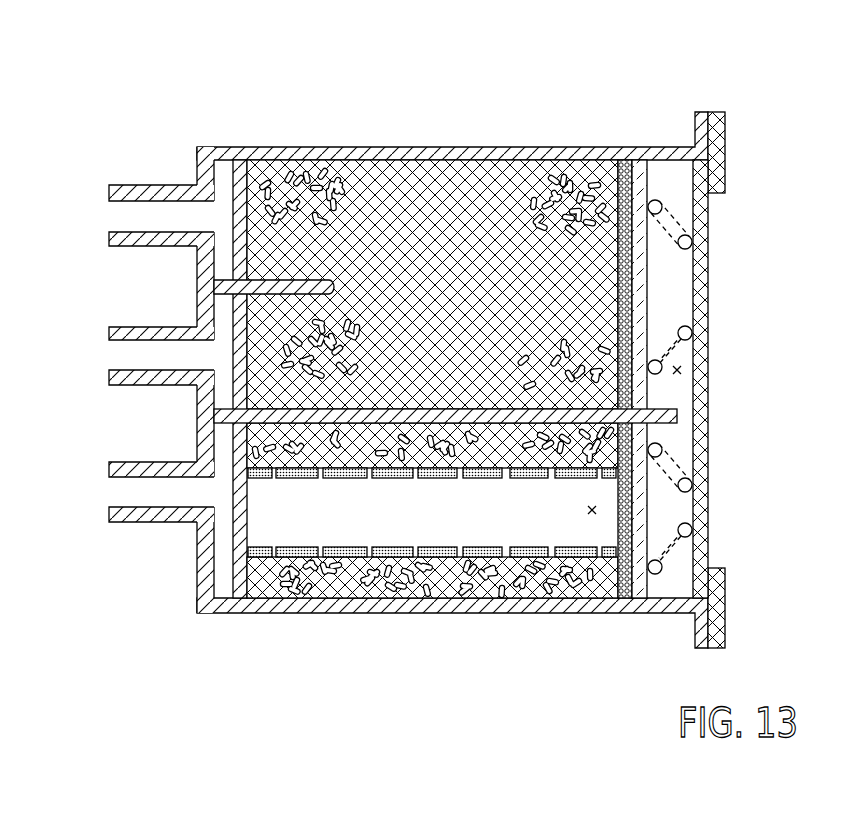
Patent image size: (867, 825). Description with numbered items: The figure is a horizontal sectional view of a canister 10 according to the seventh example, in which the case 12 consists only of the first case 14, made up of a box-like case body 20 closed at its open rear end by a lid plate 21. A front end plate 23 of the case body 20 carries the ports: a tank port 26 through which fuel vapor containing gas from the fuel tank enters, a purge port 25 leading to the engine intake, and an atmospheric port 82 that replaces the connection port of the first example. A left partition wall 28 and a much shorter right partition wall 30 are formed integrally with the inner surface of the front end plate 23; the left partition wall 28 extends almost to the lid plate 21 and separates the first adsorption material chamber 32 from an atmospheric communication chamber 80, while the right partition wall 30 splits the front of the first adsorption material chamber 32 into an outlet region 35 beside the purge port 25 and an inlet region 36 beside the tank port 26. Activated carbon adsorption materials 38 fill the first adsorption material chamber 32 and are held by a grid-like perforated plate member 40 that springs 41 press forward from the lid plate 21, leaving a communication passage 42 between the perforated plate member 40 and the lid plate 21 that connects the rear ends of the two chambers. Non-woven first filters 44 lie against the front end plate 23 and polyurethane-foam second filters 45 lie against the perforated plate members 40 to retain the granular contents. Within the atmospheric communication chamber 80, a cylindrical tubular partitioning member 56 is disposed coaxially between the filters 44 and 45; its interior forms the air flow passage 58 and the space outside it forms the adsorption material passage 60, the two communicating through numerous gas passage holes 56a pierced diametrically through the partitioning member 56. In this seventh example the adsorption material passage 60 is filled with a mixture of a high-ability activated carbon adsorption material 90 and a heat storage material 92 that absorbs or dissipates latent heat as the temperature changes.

The canister 10 is at (172, 97).
The case 12 is at (535, 108).
The first case 14 is at (460, 384).
The case body 20 is at (393, 143).
The lid plate 21 is at (700, 307).
The front end plate 23 is at (207, 440).
The purge port 25 is at (120, 377).
The tank port 26 is at (145, 191).
The left partition wall 28 is at (460, 413).
The right partition wall 30 is at (335, 285).
The first adsorption material chamber 32 is at (375, 245).
The outlet region 35 is at (272, 320).
The inlet region 36 is at (278, 170).
The adsorption materials 38 is at (347, 187).
The perforated plate member 40 is at (640, 180).
The springs 41 is at (665, 200).
The communication passage 42 is at (682, 370).
The first filter 44 is at (242, 168).
The second filter 45 is at (627, 163).
The partitioning member 56 is at (432, 572).
The gas passage holes 56a is at (418, 558).
The air flow passage 58 is at (598, 510).
The adsorption material passage 60 is at (462, 600).
The atmospheric communication chamber 80 is at (577, 593).
The atmospheric port 82 is at (140, 515).
The adsorption material 90 is at (357, 588).
The heat storage material 92 is at (290, 595).